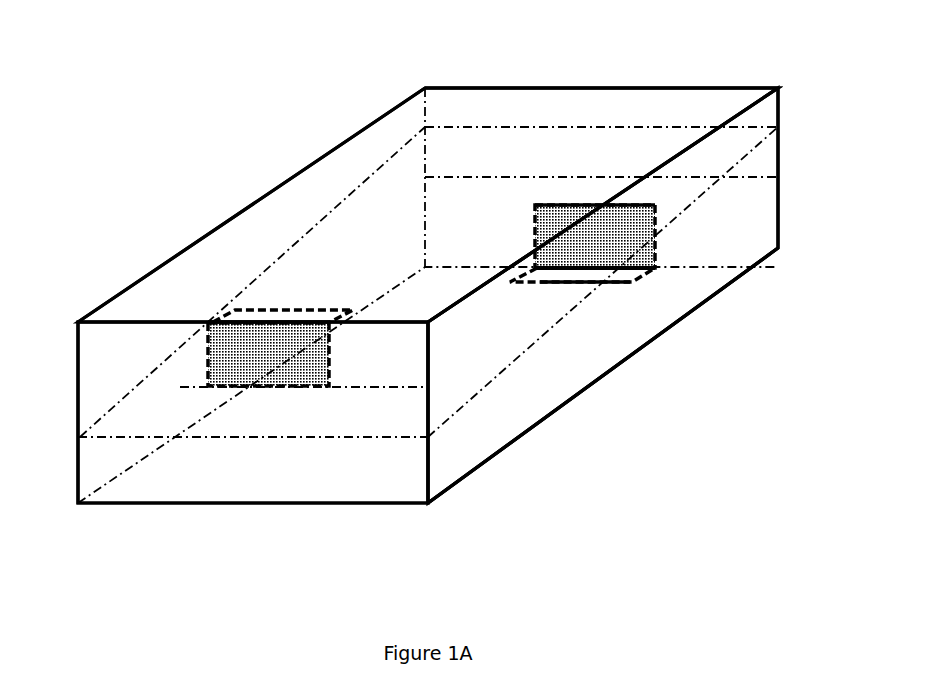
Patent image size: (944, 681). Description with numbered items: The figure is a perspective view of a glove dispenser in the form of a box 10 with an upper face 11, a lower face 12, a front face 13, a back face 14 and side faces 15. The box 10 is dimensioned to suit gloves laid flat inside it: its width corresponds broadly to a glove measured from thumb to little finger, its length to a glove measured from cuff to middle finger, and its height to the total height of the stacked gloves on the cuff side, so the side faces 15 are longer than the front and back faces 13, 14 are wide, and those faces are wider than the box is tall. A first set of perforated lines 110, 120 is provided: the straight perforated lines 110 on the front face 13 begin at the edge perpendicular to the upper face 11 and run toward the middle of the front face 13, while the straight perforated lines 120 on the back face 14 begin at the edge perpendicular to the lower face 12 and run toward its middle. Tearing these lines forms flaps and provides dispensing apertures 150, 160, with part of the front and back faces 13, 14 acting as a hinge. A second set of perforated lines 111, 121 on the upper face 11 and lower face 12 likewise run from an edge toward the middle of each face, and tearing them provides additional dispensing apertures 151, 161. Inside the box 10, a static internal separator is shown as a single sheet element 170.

The box 10 is at (312, 112).
The upper face 11 is at (270, 208).
The lower face 12 is at (480, 467).
The front face 13 is at (383, 477).
The back face 14 is at (452, 88).
The side faces 15 is at (512, 418).
The perforated lines 110 is at (208, 357).
The perforated lines 111 is at (218, 322).
The perforated lines 120 is at (545, 205).
The perforated lines 121 is at (587, 282).
The dispensing aperture 150 is at (283, 368).
The additional dispensing aperture 151 is at (272, 320).
The dispensing aperture 160 is at (573, 213).
The additional dispensing aperture 161 is at (620, 275).
The single sheet element 170 is at (543, 352).